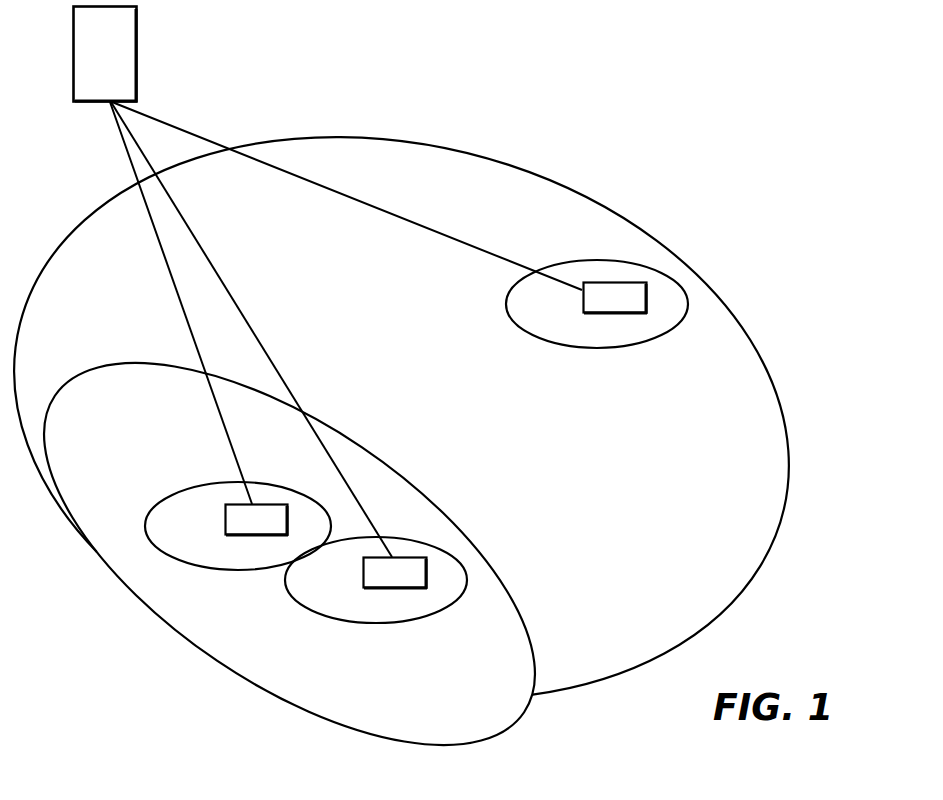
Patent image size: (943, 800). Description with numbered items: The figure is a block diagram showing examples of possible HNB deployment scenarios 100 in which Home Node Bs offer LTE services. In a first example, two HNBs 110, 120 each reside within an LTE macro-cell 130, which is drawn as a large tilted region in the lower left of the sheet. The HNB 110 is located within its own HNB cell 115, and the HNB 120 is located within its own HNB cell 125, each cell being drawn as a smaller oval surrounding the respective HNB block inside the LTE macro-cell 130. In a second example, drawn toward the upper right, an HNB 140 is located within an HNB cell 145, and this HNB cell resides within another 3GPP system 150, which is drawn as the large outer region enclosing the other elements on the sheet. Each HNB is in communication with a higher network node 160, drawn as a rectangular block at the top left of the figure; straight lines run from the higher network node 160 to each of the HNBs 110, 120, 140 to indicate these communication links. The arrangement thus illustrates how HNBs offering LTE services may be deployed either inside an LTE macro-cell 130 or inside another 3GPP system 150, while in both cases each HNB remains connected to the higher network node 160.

The HNB deployment scenarios 100 is at (571, 38).
The HNB 110 is at (248, 528).
The HNB cell 115 is at (160, 512).
The HNB 120 is at (410, 556).
The HNB cell 125 is at (466, 583).
The LTE macro-cell 130 is at (107, 373).
The HNB 140 is at (602, 283).
The HNB cell 145 is at (512, 295).
The 3GPP system 150 is at (771, 384).
The higher network node 160 is at (137, 49).